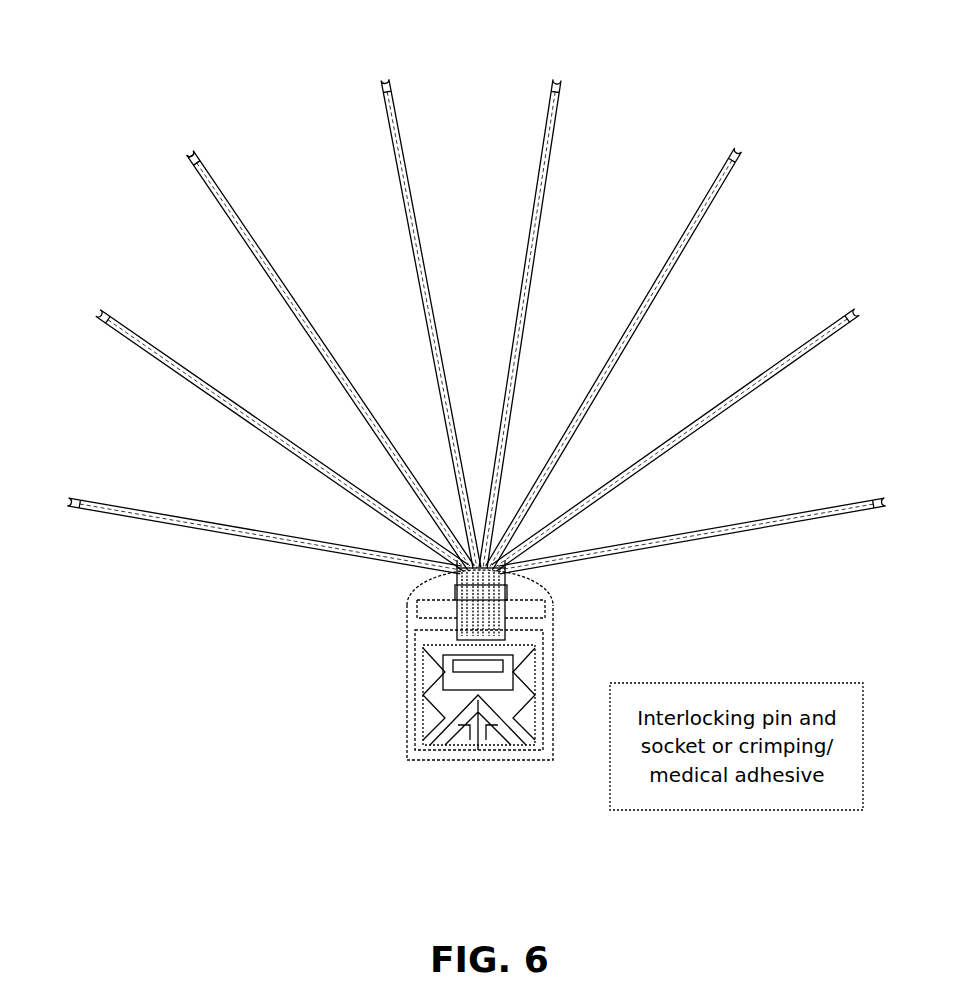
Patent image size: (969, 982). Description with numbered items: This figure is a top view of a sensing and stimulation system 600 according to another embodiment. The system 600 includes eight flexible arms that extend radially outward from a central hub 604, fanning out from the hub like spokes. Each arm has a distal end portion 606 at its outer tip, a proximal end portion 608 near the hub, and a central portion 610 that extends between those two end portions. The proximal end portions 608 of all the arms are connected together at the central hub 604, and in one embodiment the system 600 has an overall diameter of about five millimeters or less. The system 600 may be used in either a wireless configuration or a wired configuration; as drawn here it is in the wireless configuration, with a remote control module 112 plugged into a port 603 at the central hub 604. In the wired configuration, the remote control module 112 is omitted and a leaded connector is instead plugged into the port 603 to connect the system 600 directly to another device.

The sensing and stimulation system 600 is at (277, 88).
The port 603 is at (507, 600).
The central hub 604 is at (455, 576).
The distal end portion 606 is at (208, 168).
The proximal end portion 608 is at (457, 535).
The central portion 610 is at (322, 335).
The remote control module 112 is at (410, 713).